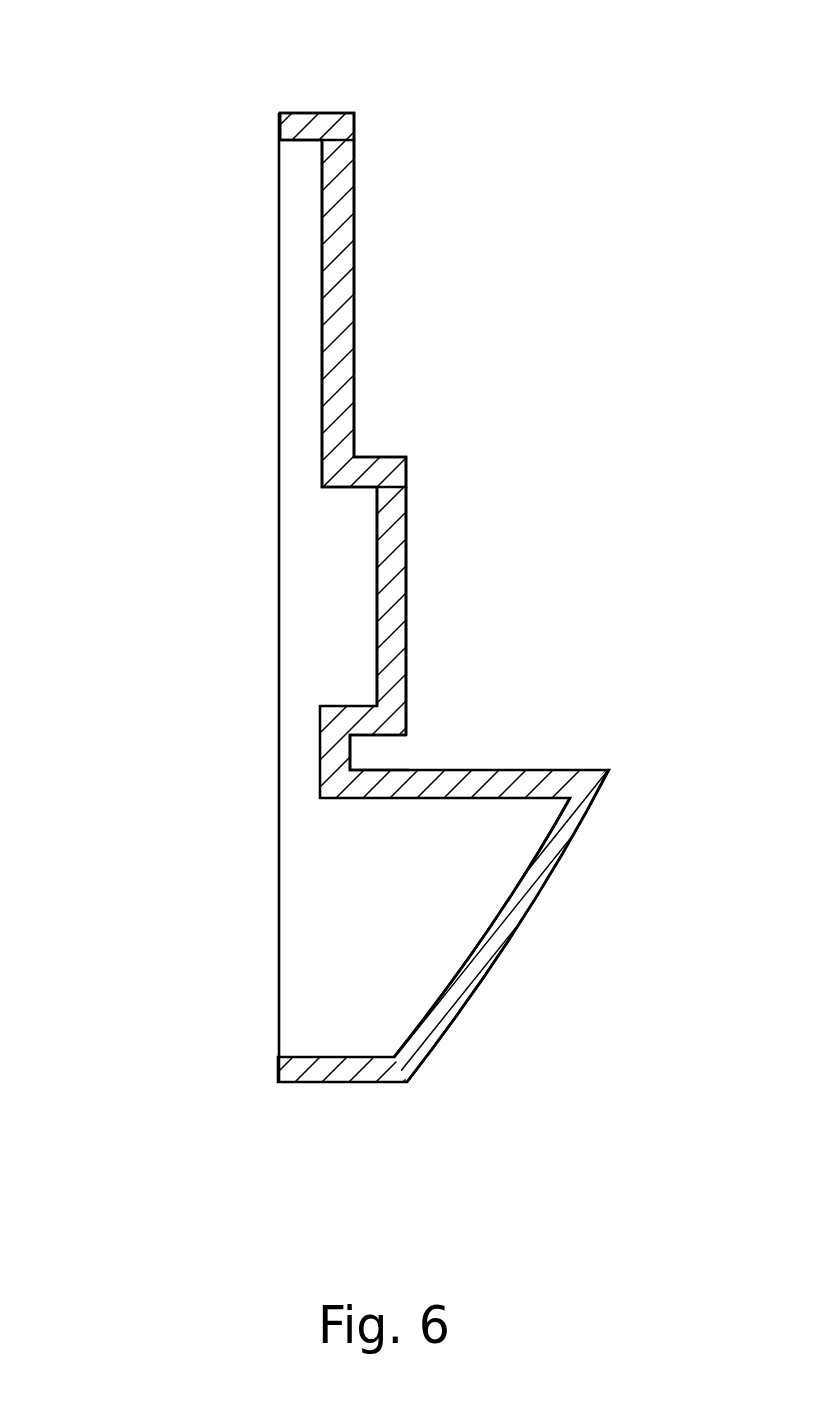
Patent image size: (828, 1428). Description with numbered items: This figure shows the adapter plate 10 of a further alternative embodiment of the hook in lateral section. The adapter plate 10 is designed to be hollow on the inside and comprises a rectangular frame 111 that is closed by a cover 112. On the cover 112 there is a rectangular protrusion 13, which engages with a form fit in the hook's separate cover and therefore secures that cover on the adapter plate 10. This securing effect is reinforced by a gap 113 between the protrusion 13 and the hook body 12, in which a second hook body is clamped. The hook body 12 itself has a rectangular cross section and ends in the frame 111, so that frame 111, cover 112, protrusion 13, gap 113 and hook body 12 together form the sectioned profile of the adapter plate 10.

The adapter plate 10 is at (225, 521).
The rectangular frame 111 is at (322, 137).
The cover 112 is at (338, 296).
The protrusion 13 is at (395, 563).
The gap 113 is at (373, 752).
The hook body 12 is at (493, 955).